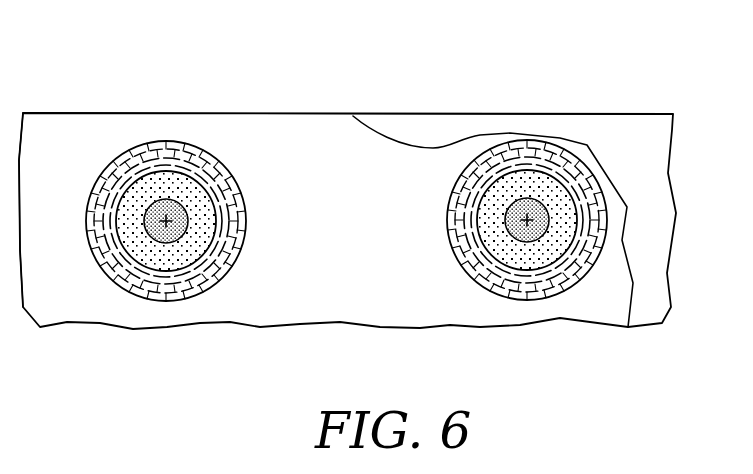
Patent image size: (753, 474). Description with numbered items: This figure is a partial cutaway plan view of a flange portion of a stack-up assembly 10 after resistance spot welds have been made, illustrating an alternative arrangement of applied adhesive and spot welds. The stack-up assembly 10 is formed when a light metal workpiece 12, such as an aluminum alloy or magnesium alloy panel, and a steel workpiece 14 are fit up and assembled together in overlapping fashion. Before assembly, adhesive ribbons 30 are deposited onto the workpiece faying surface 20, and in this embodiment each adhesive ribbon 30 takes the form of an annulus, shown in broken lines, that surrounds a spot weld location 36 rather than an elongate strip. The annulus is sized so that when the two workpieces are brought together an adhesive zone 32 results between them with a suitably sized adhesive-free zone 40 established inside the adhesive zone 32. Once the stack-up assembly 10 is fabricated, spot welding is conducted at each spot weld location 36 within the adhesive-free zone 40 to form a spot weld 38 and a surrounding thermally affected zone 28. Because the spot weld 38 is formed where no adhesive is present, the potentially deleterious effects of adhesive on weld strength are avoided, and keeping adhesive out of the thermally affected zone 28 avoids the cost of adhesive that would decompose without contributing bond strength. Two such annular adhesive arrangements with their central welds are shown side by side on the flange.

The stack-up assembly 10 is at (463, 113).
The light metal workpiece 12 is at (644, 133).
The steel workpiece 14 is at (450, 297).
The workpiece faying surface 20 is at (78, 147).
The thermally affected zone 28 is at (202, 237).
The adhesive ribbon 30 is at (110, 168).
The adhesive zone 32 is at (243, 208).
The spot weld location 36 is at (160, 228).
The spot weld 38 is at (183, 213).
The adhesive-free zone 40 is at (117, 207).